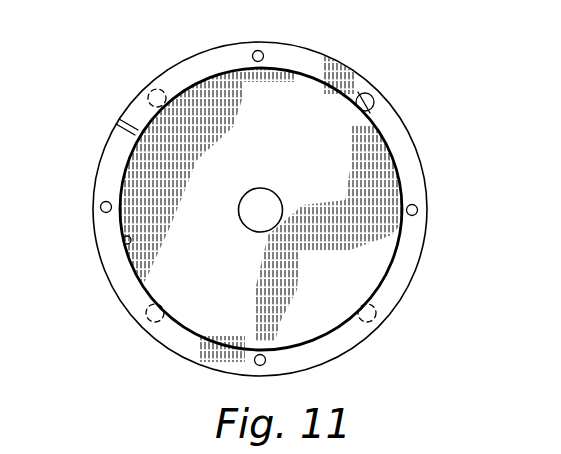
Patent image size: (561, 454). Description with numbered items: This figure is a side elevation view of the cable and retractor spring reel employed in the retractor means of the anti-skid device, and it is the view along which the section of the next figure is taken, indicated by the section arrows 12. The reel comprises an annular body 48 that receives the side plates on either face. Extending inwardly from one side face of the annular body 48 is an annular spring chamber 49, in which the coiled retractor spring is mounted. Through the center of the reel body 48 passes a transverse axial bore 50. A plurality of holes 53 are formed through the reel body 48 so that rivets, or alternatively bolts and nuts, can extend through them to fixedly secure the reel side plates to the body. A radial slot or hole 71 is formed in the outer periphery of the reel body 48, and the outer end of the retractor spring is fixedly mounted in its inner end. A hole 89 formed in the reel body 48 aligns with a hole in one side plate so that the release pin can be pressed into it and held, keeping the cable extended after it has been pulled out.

The section line 12- 12 is at (83, 0).
The annular body 48 is at (116, 294).
The annular spring chamber 49 is at (124, 241).
The transverse axial bore 50 is at (276, 200).
The holes 53 is at (259, 62).
The radial slot 71 is at (116, 136).
The hole 89 is at (166, 105).